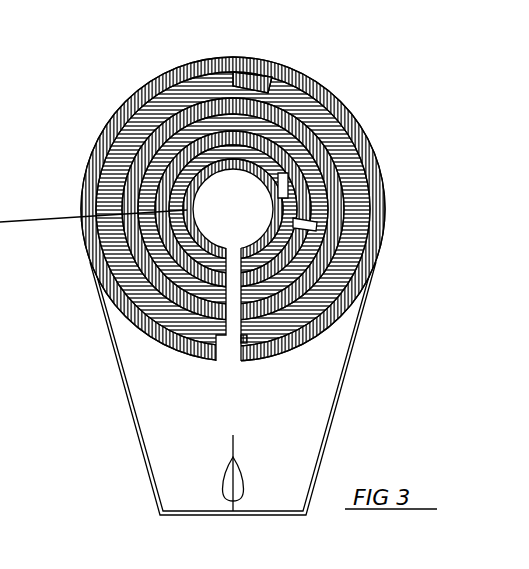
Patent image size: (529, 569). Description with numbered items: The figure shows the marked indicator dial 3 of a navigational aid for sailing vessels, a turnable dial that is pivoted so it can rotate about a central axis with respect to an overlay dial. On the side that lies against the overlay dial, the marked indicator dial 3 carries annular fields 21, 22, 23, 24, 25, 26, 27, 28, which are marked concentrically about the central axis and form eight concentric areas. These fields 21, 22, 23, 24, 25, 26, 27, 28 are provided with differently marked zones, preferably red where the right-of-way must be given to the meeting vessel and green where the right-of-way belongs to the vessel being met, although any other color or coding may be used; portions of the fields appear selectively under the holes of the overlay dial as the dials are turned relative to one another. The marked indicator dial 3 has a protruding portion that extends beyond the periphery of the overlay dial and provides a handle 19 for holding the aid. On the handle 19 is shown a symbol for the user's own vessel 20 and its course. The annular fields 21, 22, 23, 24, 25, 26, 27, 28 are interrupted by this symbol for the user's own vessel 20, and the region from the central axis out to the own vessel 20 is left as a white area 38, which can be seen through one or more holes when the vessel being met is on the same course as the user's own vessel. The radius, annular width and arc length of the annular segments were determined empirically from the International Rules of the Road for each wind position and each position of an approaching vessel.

The marked indicator dial 3 is at (140, 354).
The handle 19 is at (287, 443).
The symbol for the user's own vessel 20 is at (235, 487).
The annular field 21 is at (110, 123).
The annular field 22 is at (118, 163).
The annular field 23 is at (123, 200).
The annular field 24 is at (133, 240).
The annular field 25 is at (167, 87).
The annular field 26 is at (170, 250).
The annular field 27 is at (157, 183).
The annular field 28 is at (357, 237).
The white area 38 is at (237, 352).